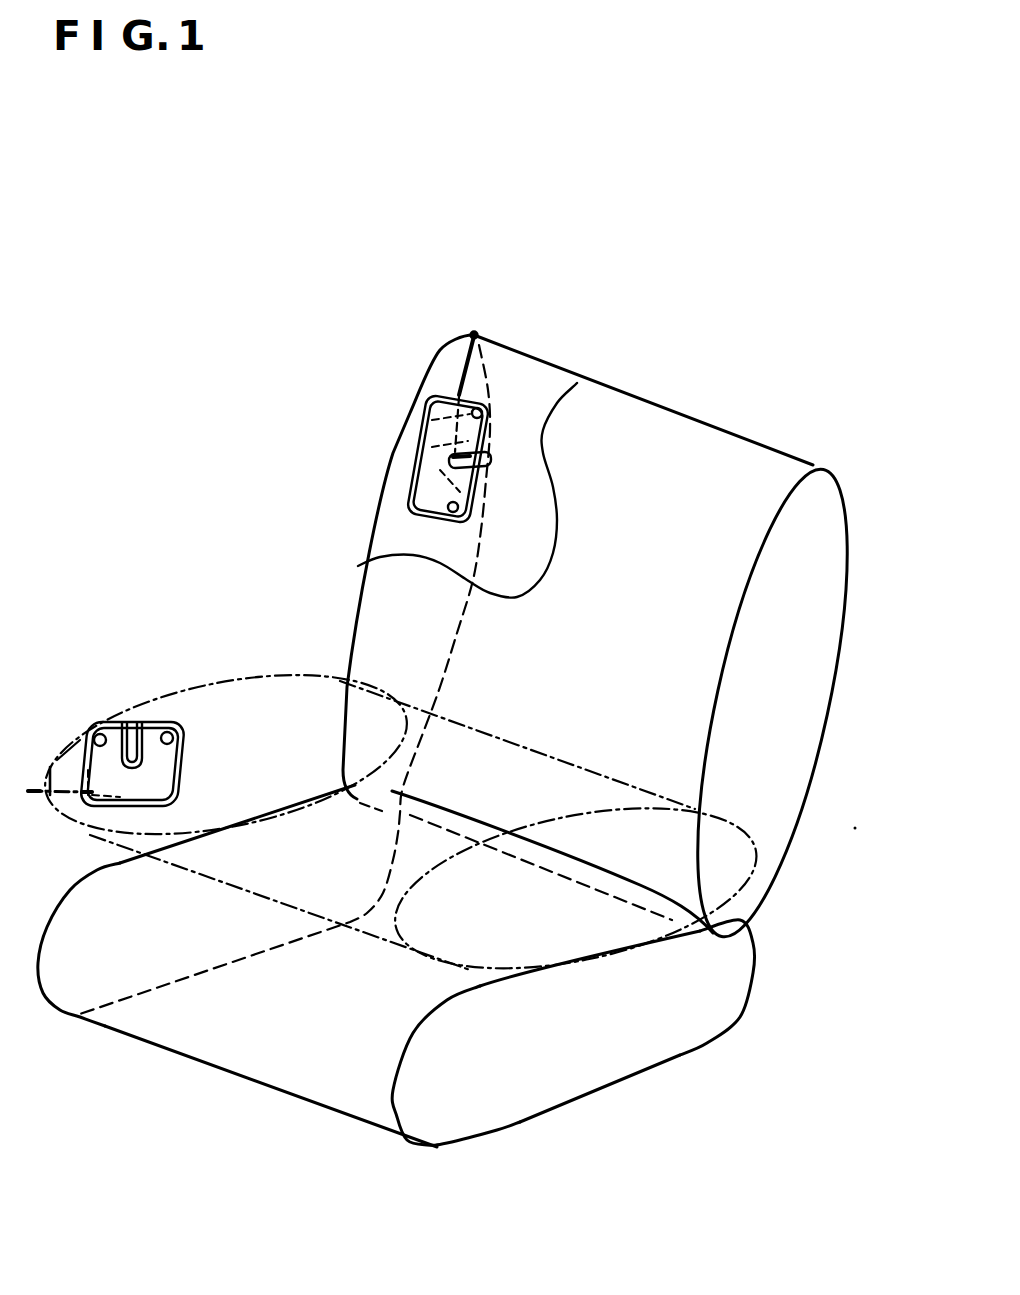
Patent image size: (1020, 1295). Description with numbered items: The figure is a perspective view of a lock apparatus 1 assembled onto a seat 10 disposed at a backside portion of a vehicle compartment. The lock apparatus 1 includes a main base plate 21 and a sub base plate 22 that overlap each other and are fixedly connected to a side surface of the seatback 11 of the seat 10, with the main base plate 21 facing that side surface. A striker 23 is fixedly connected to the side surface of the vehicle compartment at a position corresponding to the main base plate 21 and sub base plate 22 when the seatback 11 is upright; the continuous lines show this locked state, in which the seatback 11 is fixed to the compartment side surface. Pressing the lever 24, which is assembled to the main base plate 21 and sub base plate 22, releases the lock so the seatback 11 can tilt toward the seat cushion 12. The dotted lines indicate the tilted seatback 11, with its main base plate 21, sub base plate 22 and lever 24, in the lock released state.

The seat lock apparatus 1 is at (343, 407).
The seat 10 is at (548, 233).
The seatback 11 is at (667, 407).
The seat cushion 12 is at (753, 970).
The main base plate 21 is at (403, 507).
The sub base plate 22 is at (425, 508).
The striker 23 is at (495, 462).
The lever 24 is at (473, 333).